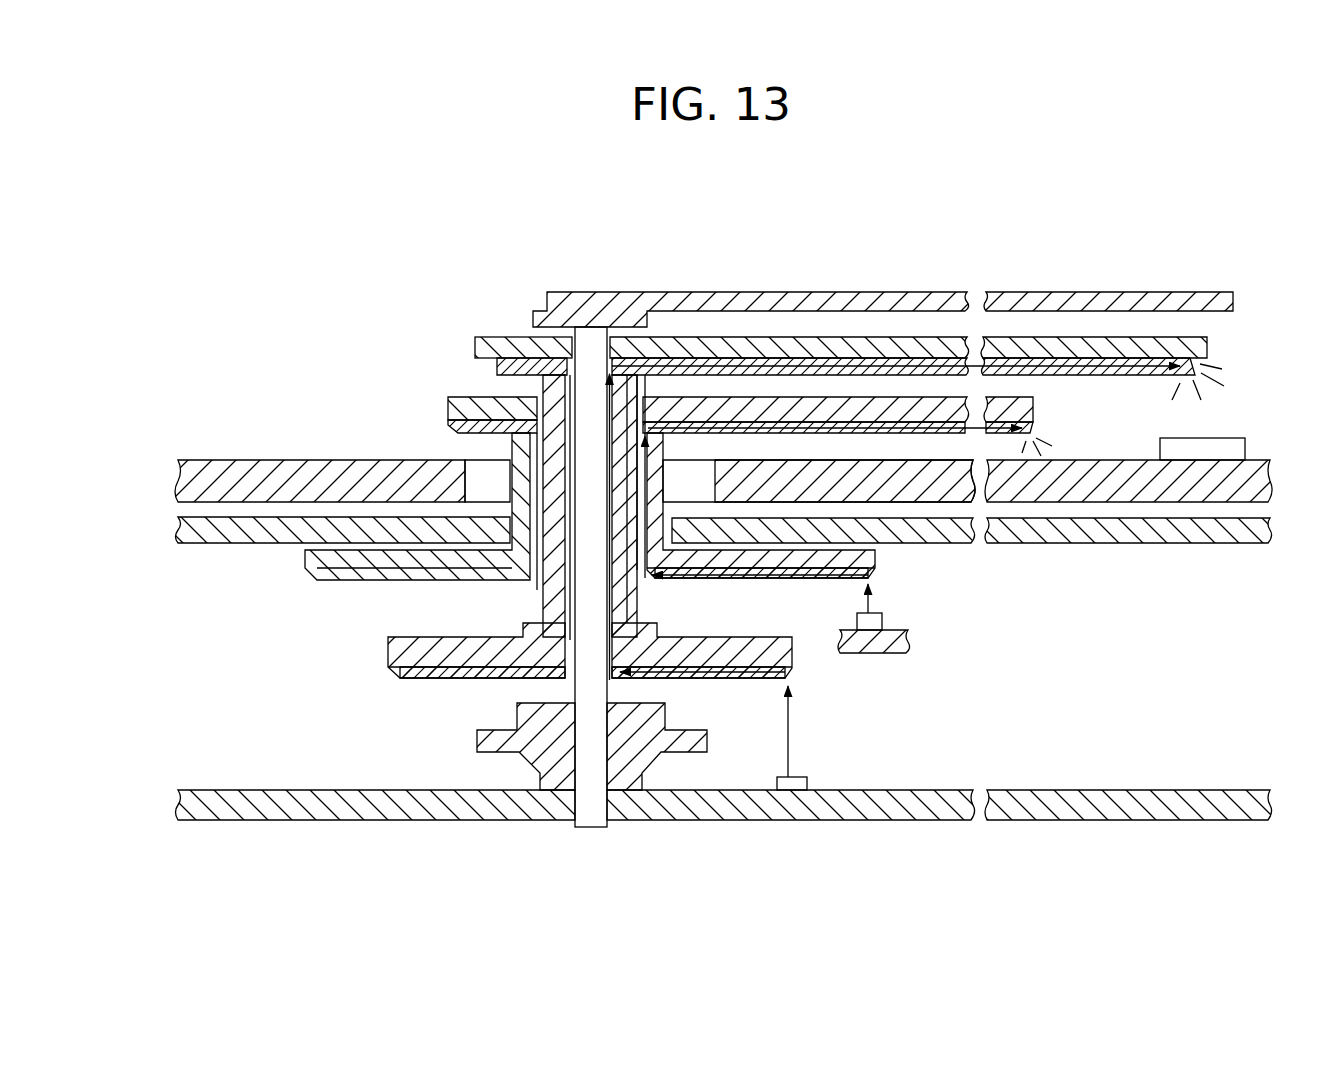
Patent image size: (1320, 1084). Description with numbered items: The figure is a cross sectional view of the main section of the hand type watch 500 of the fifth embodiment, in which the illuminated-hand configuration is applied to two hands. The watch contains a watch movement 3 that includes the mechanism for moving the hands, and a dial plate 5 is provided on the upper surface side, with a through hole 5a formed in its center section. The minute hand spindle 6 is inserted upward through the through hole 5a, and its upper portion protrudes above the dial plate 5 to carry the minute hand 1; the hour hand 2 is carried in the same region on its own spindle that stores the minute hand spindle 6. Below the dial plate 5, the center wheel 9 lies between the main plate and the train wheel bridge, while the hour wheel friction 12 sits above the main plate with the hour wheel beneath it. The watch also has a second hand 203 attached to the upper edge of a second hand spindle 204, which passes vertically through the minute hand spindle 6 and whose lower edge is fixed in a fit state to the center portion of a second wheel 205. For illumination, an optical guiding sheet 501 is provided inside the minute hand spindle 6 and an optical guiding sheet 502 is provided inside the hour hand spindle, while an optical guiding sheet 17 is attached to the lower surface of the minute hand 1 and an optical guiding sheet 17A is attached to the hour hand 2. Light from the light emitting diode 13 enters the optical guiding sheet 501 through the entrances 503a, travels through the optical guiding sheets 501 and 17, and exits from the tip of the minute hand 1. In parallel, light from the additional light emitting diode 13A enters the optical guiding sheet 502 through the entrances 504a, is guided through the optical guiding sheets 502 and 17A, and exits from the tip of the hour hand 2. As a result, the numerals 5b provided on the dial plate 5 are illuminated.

The hand type watch 500 is at (663, 268).
The second hand 203 is at (734, 292).
The second hand spindle 204 is at (592, 330).
The minute hand spindle 6 is at (540, 380).
The minute hand 1 is at (1040, 337).
The optical guiding sheet 17 is at (1108, 360).
The hour hand 2 is at (1033, 413).
The optical guiding sheet 17A is at (1036, 434).
The dial plate 5 is at (267, 458).
The through hole 5a is at (477, 472).
The hour wheel friction 12 is at (230, 527).
The numerals 5b is at (1236, 452).
The watch movement 3 is at (352, 642).
The optical guiding sheet 501 is at (540, 389).
The center wheel 9 is at (458, 662).
The entrances 503a is at (792, 675).
The optical guiding sheet 502 is at (727, 578).
The entrances 504a is at (878, 572).
The light emitting diode 13A is at (884, 620).
The second wheel 205 is at (477, 743).
The light emitting diode 13 is at (808, 784).